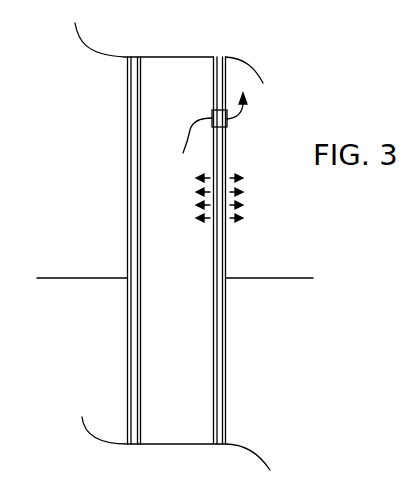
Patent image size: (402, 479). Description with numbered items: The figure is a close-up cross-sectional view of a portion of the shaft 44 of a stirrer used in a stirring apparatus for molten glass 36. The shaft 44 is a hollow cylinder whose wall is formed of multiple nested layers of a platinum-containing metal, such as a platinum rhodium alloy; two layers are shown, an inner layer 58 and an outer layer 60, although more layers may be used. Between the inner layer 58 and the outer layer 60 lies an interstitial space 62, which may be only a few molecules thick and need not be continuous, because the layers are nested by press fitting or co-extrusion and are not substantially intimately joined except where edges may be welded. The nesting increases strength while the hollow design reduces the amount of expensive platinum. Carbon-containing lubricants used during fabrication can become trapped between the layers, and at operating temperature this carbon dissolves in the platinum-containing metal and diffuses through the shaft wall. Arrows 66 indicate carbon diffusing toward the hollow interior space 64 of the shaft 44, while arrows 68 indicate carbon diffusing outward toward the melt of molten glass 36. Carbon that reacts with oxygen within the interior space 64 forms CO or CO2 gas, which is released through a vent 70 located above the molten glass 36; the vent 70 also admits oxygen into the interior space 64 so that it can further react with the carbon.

The molten glass 36 is at (98, 277).
The shaft 44 is at (126, 380).
The inner layer 58 is at (213, 344).
The outer layer 60 is at (228, 326).
The interstitial space 62 is at (127, 157).
The hollow interior space 64 is at (187, 396).
The arrows 66 is at (206, 221).
The arrows 68 is at (232, 221).
The vent 70 is at (212, 109).